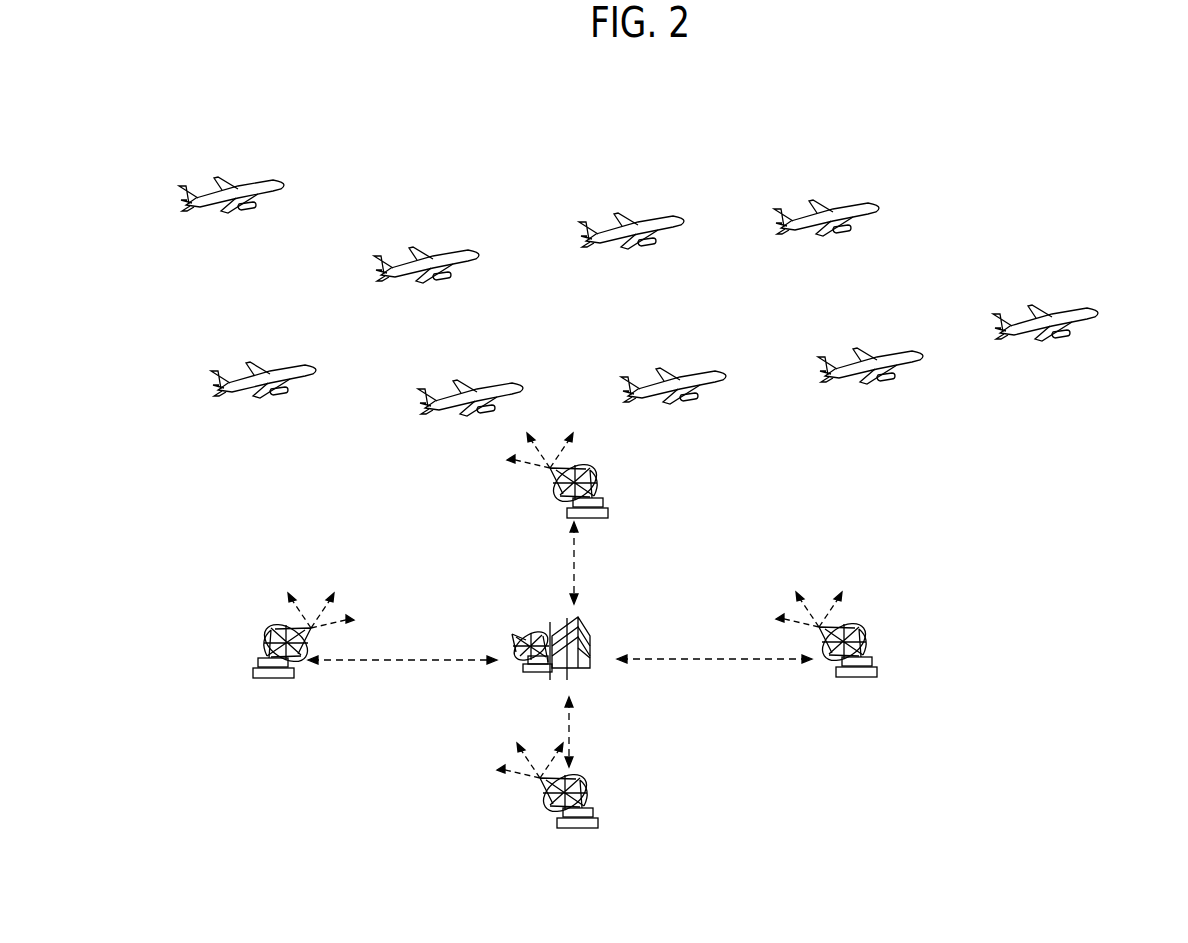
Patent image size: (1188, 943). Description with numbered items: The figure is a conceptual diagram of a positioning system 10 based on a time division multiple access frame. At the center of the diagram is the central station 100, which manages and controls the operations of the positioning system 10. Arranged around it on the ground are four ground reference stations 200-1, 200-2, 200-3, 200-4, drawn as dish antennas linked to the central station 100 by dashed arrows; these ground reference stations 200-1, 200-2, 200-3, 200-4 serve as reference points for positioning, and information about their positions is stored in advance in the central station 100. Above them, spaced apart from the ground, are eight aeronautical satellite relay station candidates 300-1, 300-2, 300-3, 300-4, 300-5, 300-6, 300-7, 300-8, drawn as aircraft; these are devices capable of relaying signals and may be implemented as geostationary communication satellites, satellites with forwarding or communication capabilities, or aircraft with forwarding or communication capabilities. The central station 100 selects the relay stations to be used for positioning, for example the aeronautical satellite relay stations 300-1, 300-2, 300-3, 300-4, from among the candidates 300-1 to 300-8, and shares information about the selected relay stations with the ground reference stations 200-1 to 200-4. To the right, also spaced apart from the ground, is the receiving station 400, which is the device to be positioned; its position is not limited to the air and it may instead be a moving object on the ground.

The positioning system 10 is at (1147, 112).
The central station 100 is at (587, 670).
The ground reference station 200-1 is at (262, 656).
The ground reference station 200-2 is at (590, 828).
The ground reference station 200-3 is at (601, 494).
The ground reference station 200-4 is at (868, 655).
The aeronautical satellite relay station candidate 300-1 is at (247, 363).
The aeronautical satellite relay station candidate 300-2 is at (410, 248).
The aeronautical satellite relay station candidate 300-3 is at (615, 214).
The aeronautical satellite relay station candidate 300-4 is at (810, 201).
The aeronautical satellite relay station candidate 300-5 is at (854, 349).
The aeronautical satellite relay station candidate 300-6 is at (215, 178).
The aeronautical satellite relay station candidate 300-7 is at (657, 369).
The aeronautical satellite relay station candidate 300-8 is at (454, 381).
The receiving station 400 is at (1029, 306).